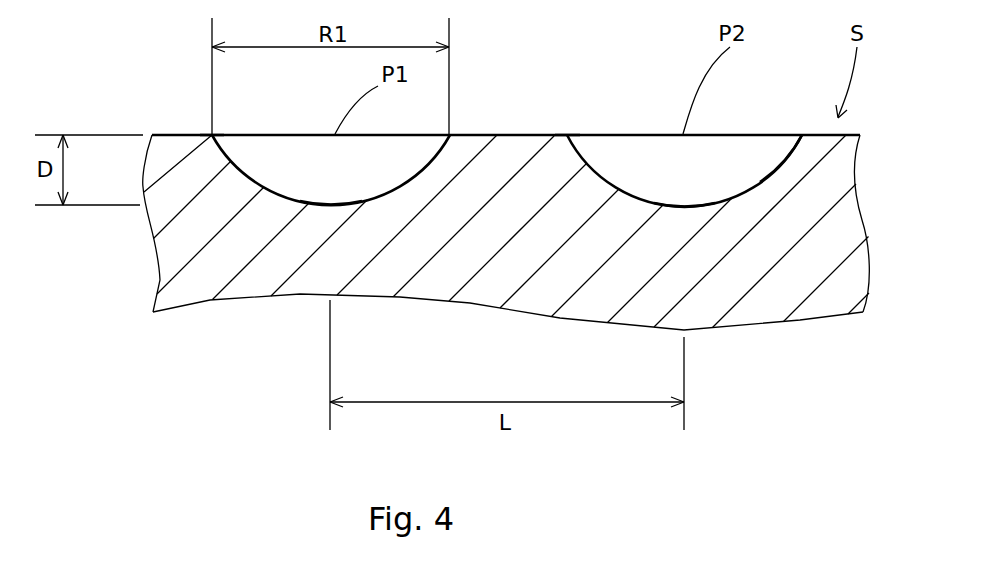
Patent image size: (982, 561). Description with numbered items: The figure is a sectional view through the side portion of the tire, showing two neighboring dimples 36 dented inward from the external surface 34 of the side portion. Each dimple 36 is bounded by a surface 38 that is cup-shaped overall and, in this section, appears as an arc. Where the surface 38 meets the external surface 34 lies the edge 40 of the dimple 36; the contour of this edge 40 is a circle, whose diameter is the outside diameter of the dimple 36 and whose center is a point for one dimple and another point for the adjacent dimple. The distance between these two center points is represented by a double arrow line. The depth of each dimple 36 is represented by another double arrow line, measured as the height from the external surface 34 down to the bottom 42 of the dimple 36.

The external surface 34 is at (177, 133).
The dimple 36 is at (413, 175).
The surface of the dimple 38 is at (777, 170).
The edge of the dimple 40 is at (213, 134).
The bottom of the dimple 42 is at (331, 206).